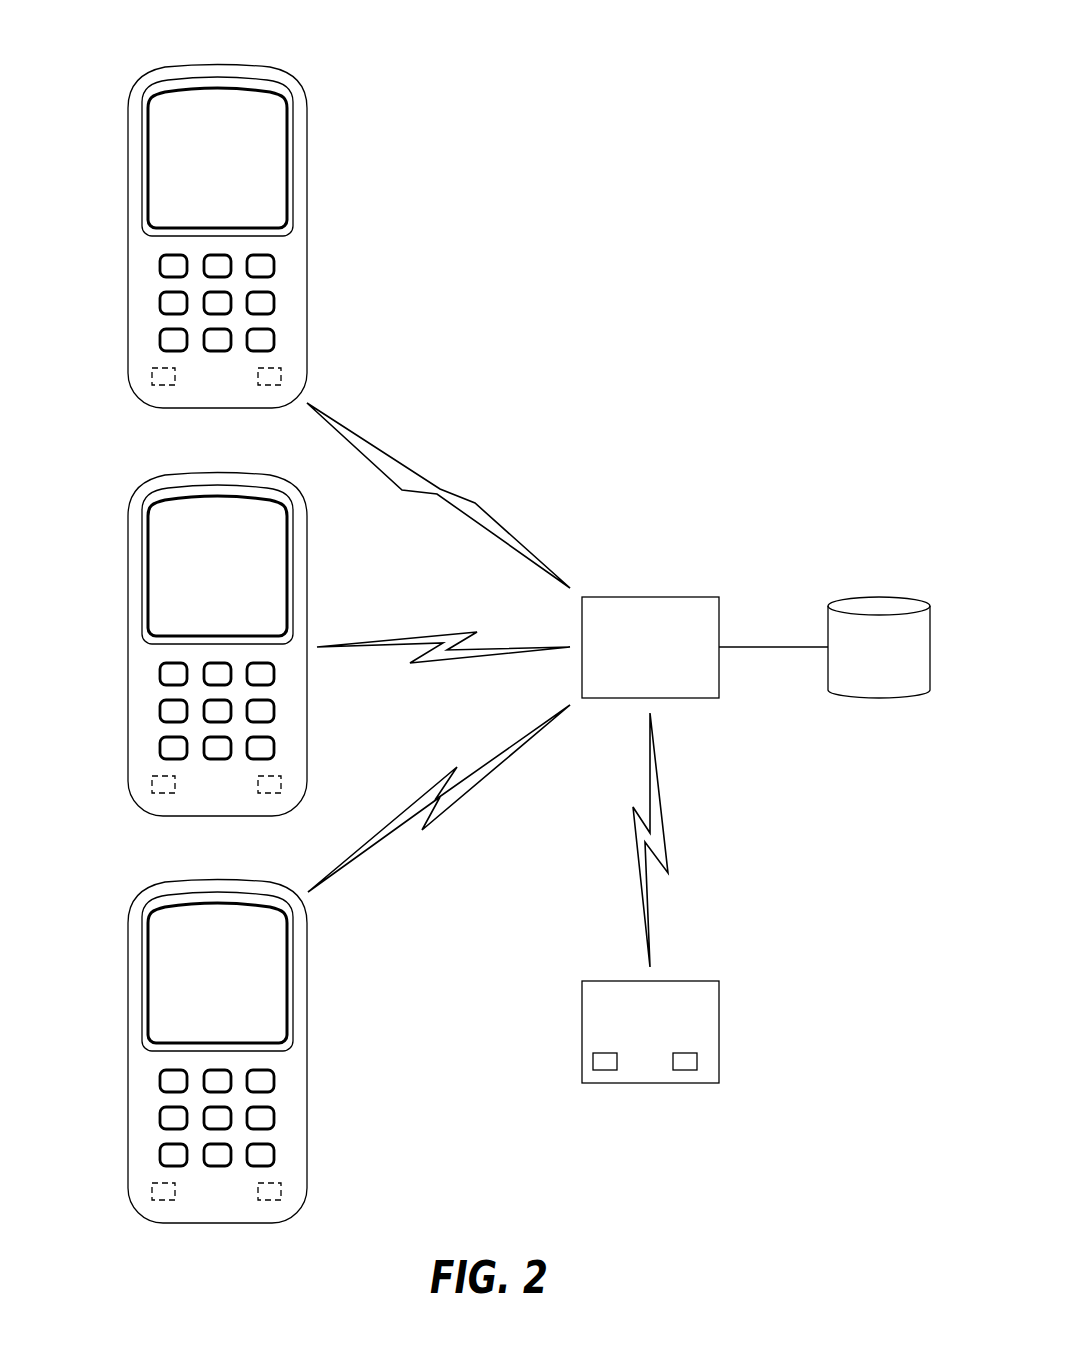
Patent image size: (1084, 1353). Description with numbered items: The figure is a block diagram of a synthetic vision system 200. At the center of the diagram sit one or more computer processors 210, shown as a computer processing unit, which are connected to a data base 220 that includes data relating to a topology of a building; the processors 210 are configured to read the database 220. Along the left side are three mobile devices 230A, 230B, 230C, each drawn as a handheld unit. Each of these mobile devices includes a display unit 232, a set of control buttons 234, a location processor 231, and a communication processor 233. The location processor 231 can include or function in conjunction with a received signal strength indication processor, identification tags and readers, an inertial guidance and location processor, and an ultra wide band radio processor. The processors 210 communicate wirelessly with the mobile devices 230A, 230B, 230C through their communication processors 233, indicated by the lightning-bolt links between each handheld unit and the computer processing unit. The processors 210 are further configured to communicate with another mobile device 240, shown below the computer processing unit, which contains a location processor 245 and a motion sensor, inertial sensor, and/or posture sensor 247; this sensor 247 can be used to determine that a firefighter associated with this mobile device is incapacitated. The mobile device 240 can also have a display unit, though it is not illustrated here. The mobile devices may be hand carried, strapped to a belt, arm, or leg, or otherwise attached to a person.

The synthetic vision system 200 is at (782, 36).
The computer processor 210 is at (650, 597).
The data base 220 is at (880, 599).
The mobile device 230A is at (217, 64).
The mobile device 230B is at (217, 628).
The mobile device 230C is at (217, 1035).
The location processor 231 is at (152, 375).
The display unit 232 is at (160, 154).
The communication processor 233 is at (282, 375).
The control buttons 234 is at (160, 265).
The mobile device 240 is at (672, 981).
The location processor 245 is at (593, 1060).
The posture sensor 247 is at (697, 1060).